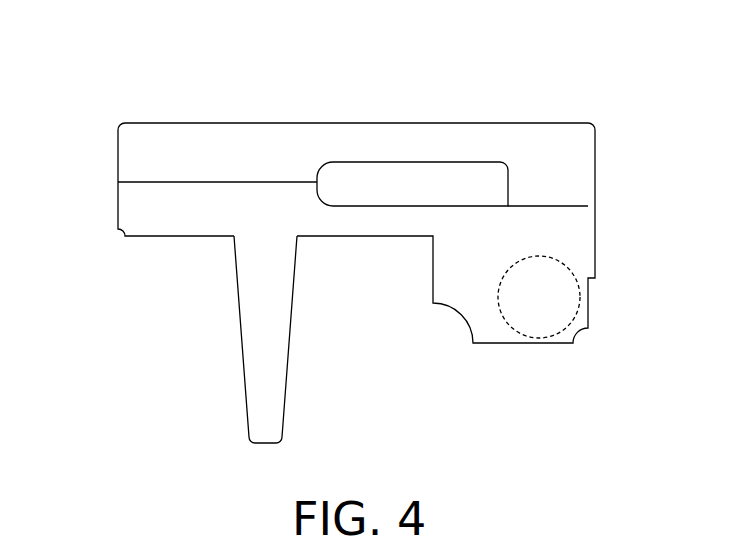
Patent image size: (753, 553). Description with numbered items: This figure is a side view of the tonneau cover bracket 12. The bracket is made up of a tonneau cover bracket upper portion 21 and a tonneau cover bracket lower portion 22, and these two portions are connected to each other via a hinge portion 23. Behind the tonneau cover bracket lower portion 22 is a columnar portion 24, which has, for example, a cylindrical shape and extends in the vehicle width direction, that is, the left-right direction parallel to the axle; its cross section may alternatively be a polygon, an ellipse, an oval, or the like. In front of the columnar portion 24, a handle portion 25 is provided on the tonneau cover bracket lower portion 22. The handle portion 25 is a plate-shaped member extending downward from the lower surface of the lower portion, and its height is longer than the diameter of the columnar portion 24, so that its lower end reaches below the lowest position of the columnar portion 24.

The tonneau cover bracket 12 is at (265, 102).
The tonneau cover bracket upper portion 21 is at (388, 128).
The tonneau cover bracket lower portion 22 is at (177, 219).
The hinge portion 23 is at (557, 206).
The columnar portion 24 is at (560, 259).
The handle portion 25 is at (252, 375).